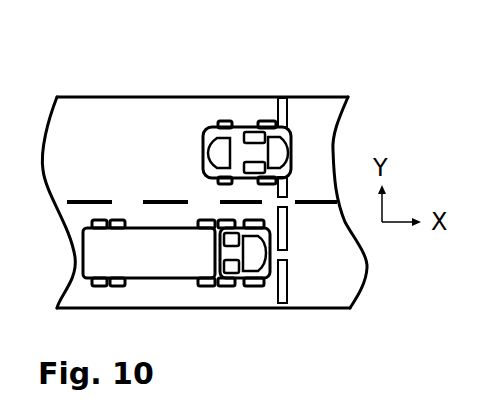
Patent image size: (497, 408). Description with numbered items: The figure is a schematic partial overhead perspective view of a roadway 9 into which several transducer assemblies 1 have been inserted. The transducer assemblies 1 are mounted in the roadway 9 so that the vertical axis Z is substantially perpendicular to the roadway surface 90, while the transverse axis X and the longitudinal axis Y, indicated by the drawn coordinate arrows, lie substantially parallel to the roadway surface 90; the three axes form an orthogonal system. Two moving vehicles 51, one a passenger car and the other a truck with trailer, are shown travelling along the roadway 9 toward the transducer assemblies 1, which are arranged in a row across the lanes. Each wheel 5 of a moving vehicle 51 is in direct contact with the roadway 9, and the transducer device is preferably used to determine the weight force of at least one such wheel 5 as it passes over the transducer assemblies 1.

The transducer assembly 1 is at (287, 108).
The wheel 5 is at (191, 196).
The moving vehicle 51 is at (194, 159).
The roadway 9 is at (338, 232).
The roadway surface 90 is at (90, 186).